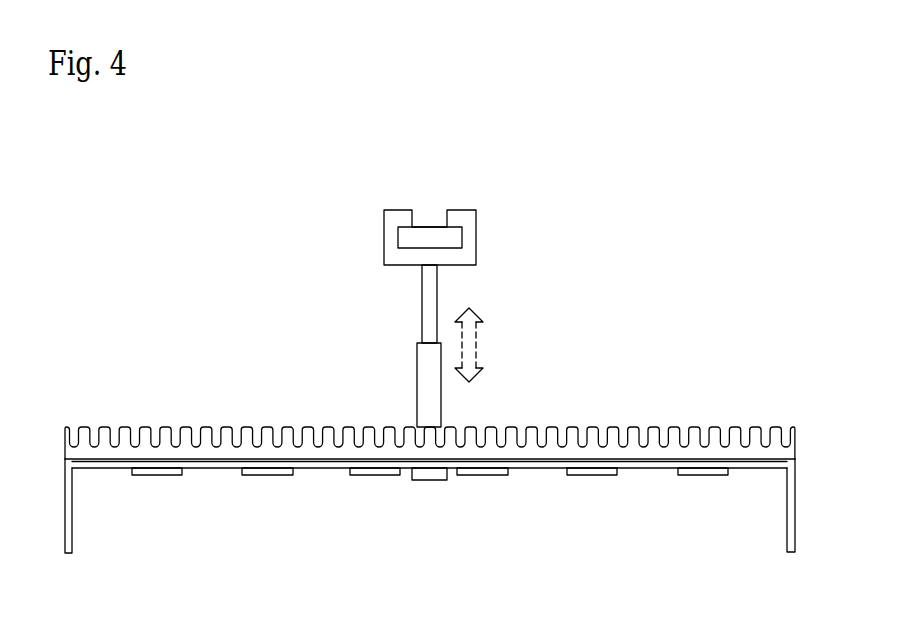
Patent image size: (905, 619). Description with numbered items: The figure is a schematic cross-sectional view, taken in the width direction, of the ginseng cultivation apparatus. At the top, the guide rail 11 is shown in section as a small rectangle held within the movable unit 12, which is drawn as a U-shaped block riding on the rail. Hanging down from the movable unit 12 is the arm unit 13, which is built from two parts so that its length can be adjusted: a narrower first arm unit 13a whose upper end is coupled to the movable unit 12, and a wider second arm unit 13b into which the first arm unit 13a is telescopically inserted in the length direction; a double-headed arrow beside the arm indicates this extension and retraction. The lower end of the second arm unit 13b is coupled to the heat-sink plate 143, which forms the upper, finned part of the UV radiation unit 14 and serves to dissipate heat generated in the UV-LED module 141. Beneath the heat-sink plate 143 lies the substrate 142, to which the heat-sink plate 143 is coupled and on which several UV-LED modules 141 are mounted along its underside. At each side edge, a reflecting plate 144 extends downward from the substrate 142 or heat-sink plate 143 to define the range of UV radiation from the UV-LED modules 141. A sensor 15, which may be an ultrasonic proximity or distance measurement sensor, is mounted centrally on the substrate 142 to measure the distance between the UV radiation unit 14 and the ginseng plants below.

The guide rail 11 is at (428, 235).
The movable unit 12 is at (466, 200).
The arm unit 13 is at (454, 333).
The first arm unit 13a is at (432, 283).
The second arm unit 13b is at (433, 397).
The UV radiation unit 14 is at (455, 432).
The UV-LED module 141 is at (152, 475).
The substrate 142 is at (215, 470).
The heat-sink plate 143 is at (602, 427).
The reflecting plate 144 is at (790, 490).
The sensor 15 is at (425, 482).